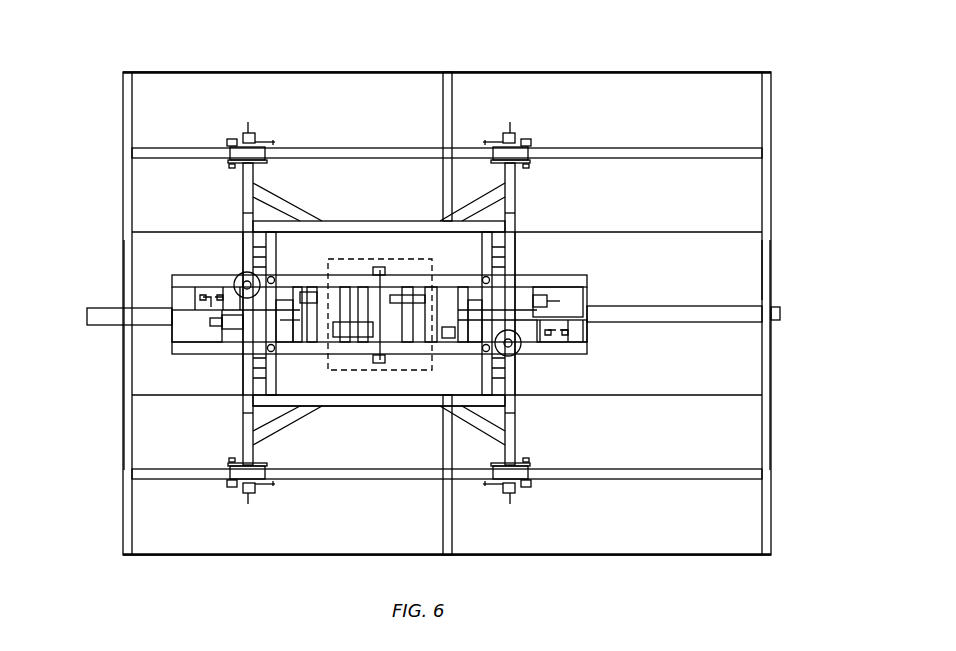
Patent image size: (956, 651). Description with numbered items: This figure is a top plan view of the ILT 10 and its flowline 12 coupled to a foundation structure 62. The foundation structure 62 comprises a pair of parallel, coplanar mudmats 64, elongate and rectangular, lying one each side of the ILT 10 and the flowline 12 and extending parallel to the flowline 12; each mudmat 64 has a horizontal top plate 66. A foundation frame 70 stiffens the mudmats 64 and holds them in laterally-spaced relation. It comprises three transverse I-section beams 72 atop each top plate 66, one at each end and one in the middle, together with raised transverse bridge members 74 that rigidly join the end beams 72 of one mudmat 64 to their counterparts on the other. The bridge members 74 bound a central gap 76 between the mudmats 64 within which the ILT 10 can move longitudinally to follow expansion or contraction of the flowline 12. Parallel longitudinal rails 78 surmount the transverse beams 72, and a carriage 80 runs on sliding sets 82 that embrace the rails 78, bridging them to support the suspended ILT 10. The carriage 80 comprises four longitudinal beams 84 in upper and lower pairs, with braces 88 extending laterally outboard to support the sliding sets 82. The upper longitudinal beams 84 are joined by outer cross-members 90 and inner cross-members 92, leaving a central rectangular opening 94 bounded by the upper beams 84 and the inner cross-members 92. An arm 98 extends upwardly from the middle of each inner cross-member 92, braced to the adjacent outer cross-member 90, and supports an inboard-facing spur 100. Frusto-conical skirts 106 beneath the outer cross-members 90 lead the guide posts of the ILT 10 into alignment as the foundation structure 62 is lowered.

The ILT 10 is at (594, 277).
The flowline 12 is at (94, 308).
The foundation structure 62 is at (112, 487).
The mudmats 64 is at (583, 72).
The top plate 66 is at (180, 75).
The foundation frame 70 is at (780, 436).
The transverse I-section beams 72 is at (123, 76).
The transverse bridge members 74 is at (123, 360).
The central gap 76 is at (742, 268).
The longitudinal rails 78 is at (345, 152).
The carriage 80 is at (242, 389).
The sliding sets 82 is at (246, 132).
The longitudinal beams 84 is at (368, 221).
The braces 88 is at (243, 184).
The outer cross-members 90 is at (243, 241).
The inner cross-members 92 is at (276, 242).
The central rectangular opening 94 is at (392, 400).
The arm 98 is at (240, 323).
The inboard-facing spur 100 is at (300, 330).
The frusto-conical skirts 106 is at (236, 286).